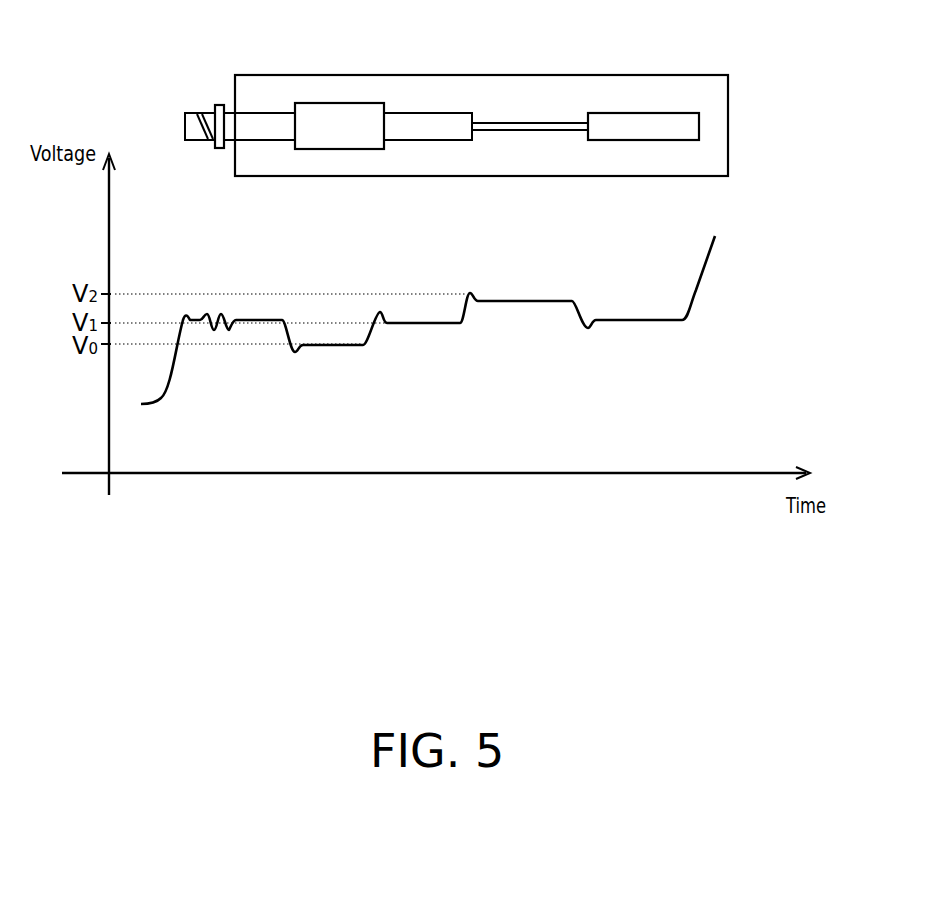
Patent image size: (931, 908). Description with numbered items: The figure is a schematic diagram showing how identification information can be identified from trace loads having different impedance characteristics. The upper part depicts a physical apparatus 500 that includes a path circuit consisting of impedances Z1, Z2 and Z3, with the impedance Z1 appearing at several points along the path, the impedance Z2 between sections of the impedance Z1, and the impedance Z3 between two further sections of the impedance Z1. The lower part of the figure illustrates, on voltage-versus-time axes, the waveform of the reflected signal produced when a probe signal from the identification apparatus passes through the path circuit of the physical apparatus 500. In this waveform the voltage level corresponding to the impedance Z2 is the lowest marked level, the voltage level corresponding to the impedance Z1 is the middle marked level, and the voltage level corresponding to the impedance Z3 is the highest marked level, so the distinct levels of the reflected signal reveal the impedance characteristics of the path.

The physical apparatus 500 is at (728, 113).
The impedance Z1 is at (263, 117).
The impedance Z2 is at (335, 115).
The impedance Z3 is at (530, 125).